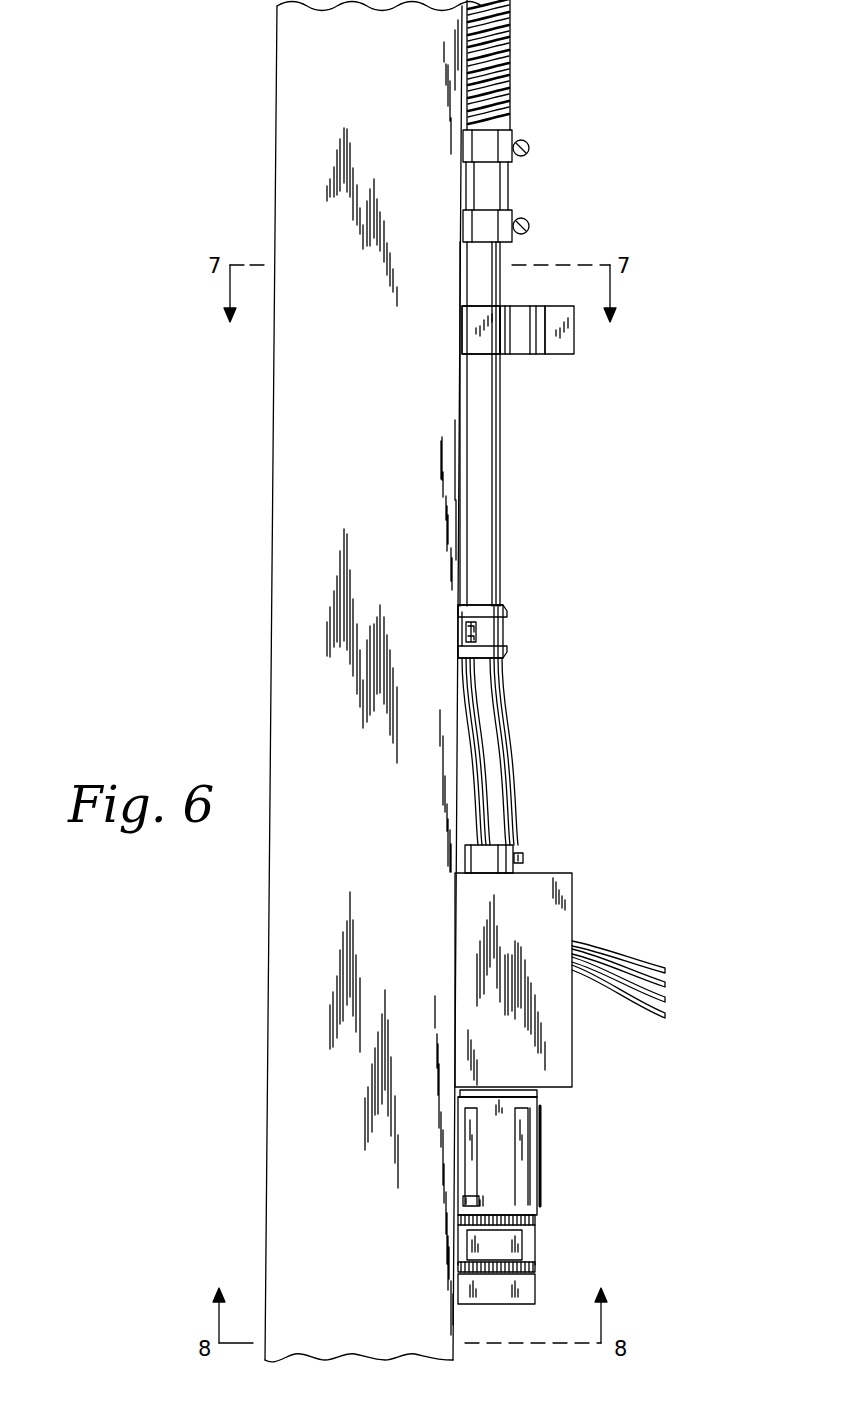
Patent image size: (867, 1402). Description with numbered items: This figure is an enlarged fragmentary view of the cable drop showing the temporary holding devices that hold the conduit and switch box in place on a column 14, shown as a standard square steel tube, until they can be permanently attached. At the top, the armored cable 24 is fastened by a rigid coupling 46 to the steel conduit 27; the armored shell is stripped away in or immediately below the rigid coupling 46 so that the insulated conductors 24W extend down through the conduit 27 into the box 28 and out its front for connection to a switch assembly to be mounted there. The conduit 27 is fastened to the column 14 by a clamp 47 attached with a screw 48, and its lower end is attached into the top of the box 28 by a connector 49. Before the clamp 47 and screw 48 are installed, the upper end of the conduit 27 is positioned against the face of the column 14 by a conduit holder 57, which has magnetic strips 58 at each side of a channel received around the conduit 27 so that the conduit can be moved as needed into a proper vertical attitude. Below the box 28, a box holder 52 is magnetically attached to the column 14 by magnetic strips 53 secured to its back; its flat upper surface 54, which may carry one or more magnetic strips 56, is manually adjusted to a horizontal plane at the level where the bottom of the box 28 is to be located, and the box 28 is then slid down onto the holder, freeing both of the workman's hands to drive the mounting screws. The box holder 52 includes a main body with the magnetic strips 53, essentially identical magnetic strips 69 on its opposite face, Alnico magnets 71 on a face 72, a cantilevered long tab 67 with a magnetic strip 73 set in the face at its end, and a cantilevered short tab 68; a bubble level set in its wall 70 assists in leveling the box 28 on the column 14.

The column 14 is at (336, 80).
The armored cable 24 is at (501, 58).
The insulated conductors 24W is at (623, 969).
The rigid coupling 46 is at (509, 181).
The conduit 27 is at (480, 432).
The conduit holder 57 is at (594, 347).
The magnetic strips 58 is at (460, 332).
The clamp 47 is at (503, 622).
The screw 48 is at (477, 638).
The connector 49 is at (513, 845).
The box 28 is at (548, 872).
The magnetic strips 56 is at (501, 1082).
The flat upper surface 54 is at (531, 1090).
The wall 70 is at (540, 1100).
The Alnico magnets 71 is at (472, 1147).
The face 72 is at (530, 1152).
The magnetic strips 69 is at (535, 1169).
The box holder 52 is at (568, 1161).
The magnetic strips 53 is at (478, 1200).
The long tab 67 is at (530, 1242).
The magnetic strip 73 is at (522, 1248).
The short tab 68 is at (530, 1287).